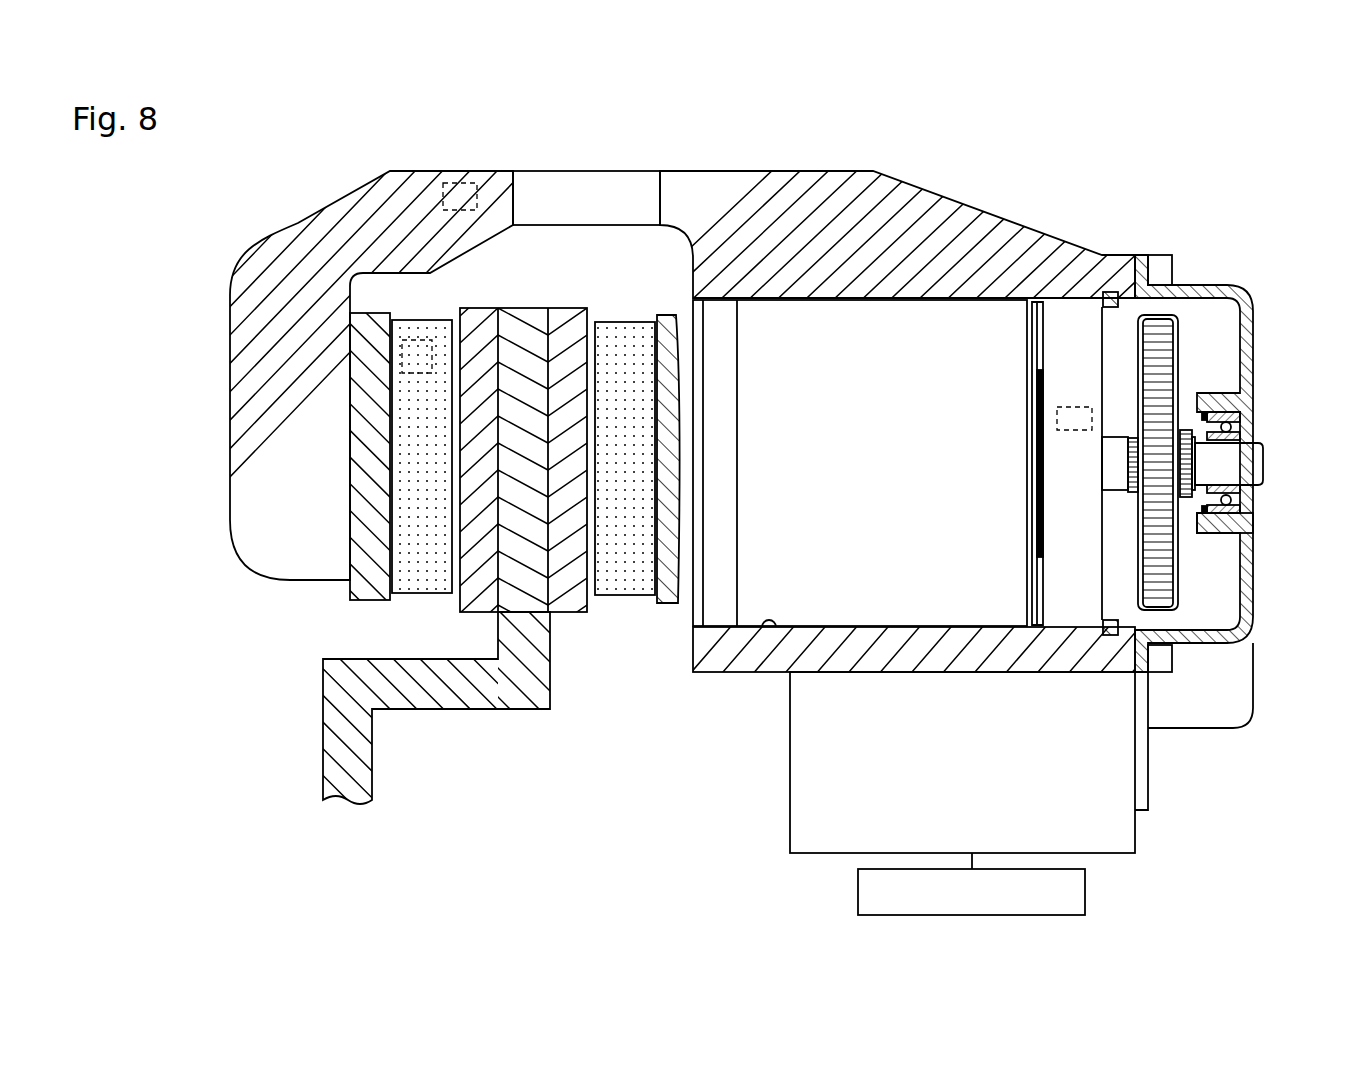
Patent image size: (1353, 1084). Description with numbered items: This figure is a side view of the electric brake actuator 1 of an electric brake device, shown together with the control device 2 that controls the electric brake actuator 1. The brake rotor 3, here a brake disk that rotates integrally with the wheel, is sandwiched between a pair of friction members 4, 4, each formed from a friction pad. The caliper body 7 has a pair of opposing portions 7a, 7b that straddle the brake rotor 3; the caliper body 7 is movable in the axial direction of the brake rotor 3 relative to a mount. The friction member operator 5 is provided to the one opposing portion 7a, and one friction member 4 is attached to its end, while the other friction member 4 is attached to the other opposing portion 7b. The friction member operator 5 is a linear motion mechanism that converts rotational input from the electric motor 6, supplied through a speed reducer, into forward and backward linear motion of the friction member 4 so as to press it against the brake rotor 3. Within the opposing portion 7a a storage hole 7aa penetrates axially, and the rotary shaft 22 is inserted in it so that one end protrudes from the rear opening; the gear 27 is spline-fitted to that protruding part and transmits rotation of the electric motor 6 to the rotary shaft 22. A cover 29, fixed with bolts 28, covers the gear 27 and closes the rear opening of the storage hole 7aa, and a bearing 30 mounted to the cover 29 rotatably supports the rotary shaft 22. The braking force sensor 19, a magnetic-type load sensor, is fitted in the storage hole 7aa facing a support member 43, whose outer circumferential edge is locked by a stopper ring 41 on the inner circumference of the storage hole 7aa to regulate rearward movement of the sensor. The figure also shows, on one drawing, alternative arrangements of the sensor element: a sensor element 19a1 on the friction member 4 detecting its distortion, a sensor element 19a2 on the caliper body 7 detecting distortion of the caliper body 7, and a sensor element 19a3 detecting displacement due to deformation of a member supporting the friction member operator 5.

The electric brake actuator 1 is at (860, 366).
The control device 2 is at (1085, 888).
The brake rotor 3 is at (522, 320).
The friction member 4 is at (415, 588).
The friction member operator 5 is at (830, 312).
The electric motor 6 is at (1127, 765).
The caliper body 7 is at (628, 461).
The opposing portion 7a is at (713, 660).
The storage hole 7aa is at (763, 630).
The opposing portion 7b is at (247, 382).
The braking force sensor 19 is at (1221, 491).
The sensor element 19a1 is at (417, 340).
The sensor element 19a2 is at (457, 185).
The sensor element 19a3 is at (1080, 407).
The rotary shaft 22 is at (1245, 462).
The gear 27 is at (1183, 560).
The bolt 28 is at (1163, 272).
The cover 29 is at (1253, 524).
The bearing 30 is at (1247, 424).
The stopper ring 41 is at (1112, 290).
The support member 43 is at (1059, 312).